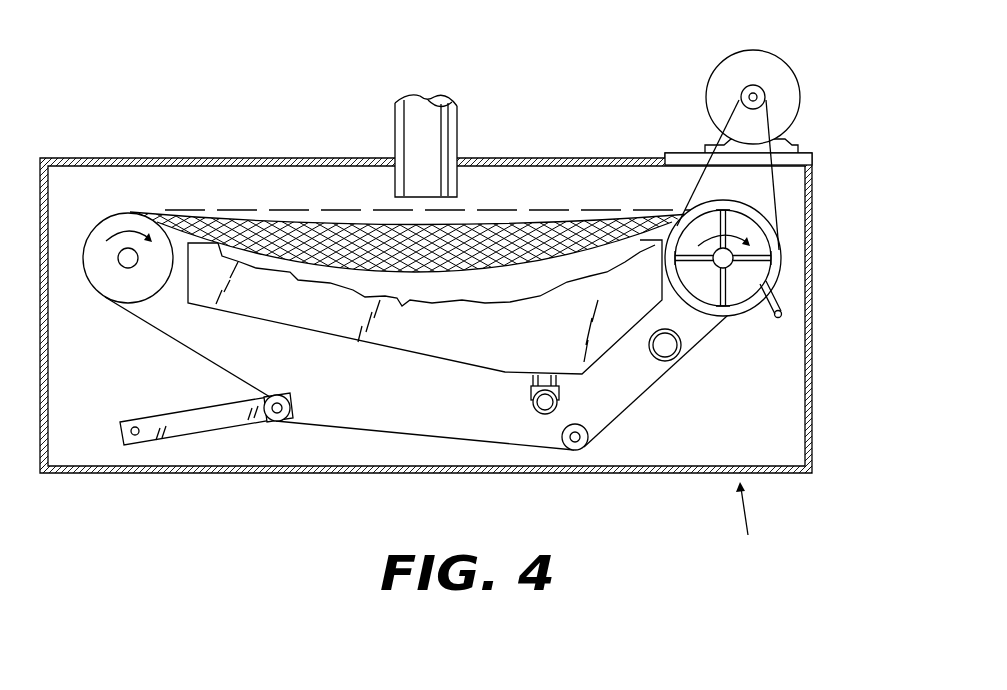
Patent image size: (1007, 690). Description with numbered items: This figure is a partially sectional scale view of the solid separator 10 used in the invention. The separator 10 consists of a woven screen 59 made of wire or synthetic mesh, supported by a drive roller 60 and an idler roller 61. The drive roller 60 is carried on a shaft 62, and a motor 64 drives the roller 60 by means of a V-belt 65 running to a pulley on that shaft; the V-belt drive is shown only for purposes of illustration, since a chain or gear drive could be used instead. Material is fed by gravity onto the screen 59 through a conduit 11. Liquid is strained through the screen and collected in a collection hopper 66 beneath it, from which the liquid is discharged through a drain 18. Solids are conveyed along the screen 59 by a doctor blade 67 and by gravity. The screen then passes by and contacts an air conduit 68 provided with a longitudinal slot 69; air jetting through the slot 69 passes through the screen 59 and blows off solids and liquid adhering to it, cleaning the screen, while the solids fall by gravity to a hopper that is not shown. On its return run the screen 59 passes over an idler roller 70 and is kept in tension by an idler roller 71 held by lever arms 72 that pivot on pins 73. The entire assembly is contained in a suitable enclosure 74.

The separator 10 is at (744, 522).
The conduit 11 is at (456, 122).
The drain 18 is at (531, 398).
The woven screen 59 is at (273, 220).
The drive roller 60 is at (743, 228).
The idler roller 61 is at (97, 272).
The shaft 62 is at (729, 263).
The motor 64 is at (770, 48).
The V-belt 65 is at (697, 181).
The collection hopper 66 is at (426, 347).
The doctor blade 67 is at (771, 302).
The air conduit 68 is at (651, 351).
The longitudinal slot 69 is at (681, 355).
The idler roller 70 is at (579, 428).
The idler roller 71 is at (276, 400).
The lever arms 72 is at (172, 414).
The pins 73 is at (122, 431).
The enclosure 74 is at (450, 313).